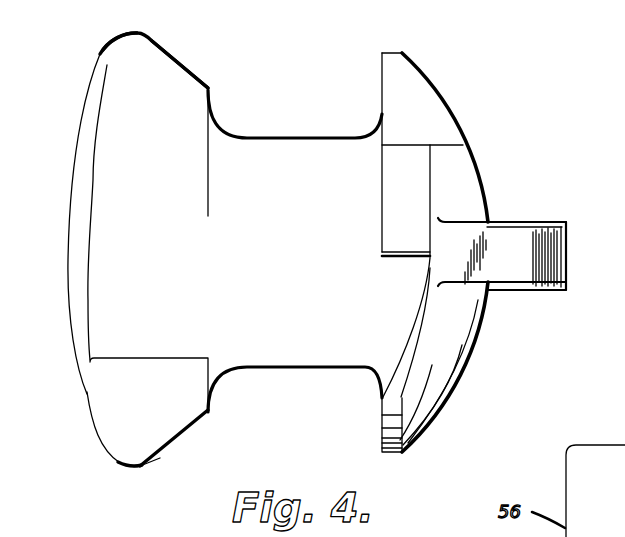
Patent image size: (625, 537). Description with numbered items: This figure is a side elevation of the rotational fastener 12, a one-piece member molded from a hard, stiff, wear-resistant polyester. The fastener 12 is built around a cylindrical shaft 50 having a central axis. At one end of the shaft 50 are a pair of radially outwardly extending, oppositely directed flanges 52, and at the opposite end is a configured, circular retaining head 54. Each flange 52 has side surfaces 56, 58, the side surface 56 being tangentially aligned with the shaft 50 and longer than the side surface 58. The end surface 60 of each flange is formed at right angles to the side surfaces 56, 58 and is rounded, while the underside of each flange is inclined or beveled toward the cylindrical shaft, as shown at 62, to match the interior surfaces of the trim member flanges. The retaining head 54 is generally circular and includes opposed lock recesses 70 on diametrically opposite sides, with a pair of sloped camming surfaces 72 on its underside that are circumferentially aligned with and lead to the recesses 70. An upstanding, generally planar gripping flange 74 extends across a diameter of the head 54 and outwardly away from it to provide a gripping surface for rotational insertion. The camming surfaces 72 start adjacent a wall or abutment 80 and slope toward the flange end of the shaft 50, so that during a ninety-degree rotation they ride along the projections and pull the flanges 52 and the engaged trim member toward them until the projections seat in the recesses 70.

The fastener 12 is at (462, 102).
The cylindrical shaft 50 is at (304, 224).
The flanges 52 is at (128, 83).
The retaining head 54 is at (480, 184).
The side surface 56 is at (153, 156).
The side surface 58 is at (157, 413).
The end surface 60 is at (139, 33).
The bevel 62 is at (195, 72).
The lock recess 70 is at (436, 145).
The sloped camming surface 72 is at (402, 335).
The gripping flange 74 is at (550, 268).
The abutment 80 is at (385, 258).